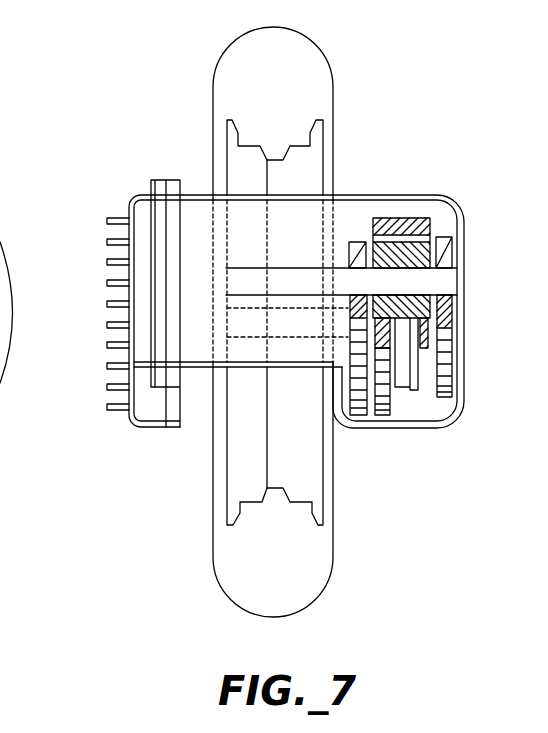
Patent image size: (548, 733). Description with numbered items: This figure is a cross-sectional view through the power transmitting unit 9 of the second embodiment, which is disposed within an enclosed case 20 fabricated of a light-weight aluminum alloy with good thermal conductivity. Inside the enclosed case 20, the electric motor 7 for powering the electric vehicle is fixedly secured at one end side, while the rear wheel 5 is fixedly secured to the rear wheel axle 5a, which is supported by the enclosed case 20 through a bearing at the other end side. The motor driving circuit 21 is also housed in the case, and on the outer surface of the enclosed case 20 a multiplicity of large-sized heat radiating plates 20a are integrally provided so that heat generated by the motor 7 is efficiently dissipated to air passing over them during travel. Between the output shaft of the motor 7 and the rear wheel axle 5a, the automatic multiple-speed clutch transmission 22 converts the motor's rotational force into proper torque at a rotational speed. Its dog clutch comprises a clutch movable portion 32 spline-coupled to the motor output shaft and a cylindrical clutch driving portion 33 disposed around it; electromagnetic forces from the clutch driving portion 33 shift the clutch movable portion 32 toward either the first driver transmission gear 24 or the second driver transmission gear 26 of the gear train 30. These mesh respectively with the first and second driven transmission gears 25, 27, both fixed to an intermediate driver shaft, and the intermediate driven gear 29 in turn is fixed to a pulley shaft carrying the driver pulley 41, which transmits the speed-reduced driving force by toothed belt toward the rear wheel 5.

The rear wheel 5 is at (245, 553).
The rear wheel axle 5a is at (283, 328).
The electric motor 7 is at (198, 215).
The power transmitting unit 9 is at (185, 117).
The enclosed case 20 is at (425, 197).
The heat radiating plates 20a is at (107, 283).
The motor driving circuit 21 is at (148, 410).
The automatic multiple-speed clutch transmission 22 is at (430, 212).
The first driver transmission gear 24 is at (438, 248).
The first driven transmission gear 25 is at (443, 342).
The second driver transmission gear 26 is at (358, 242).
The second driven transmission gear 27 is at (357, 415).
The intermediate driven gear 29 is at (382, 417).
The gear train 30 is at (445, 419).
The clutch movable portion 32 is at (433, 307).
The clutch driving portion 33 is at (420, 223).
The driver pulley 41 is at (405, 390).